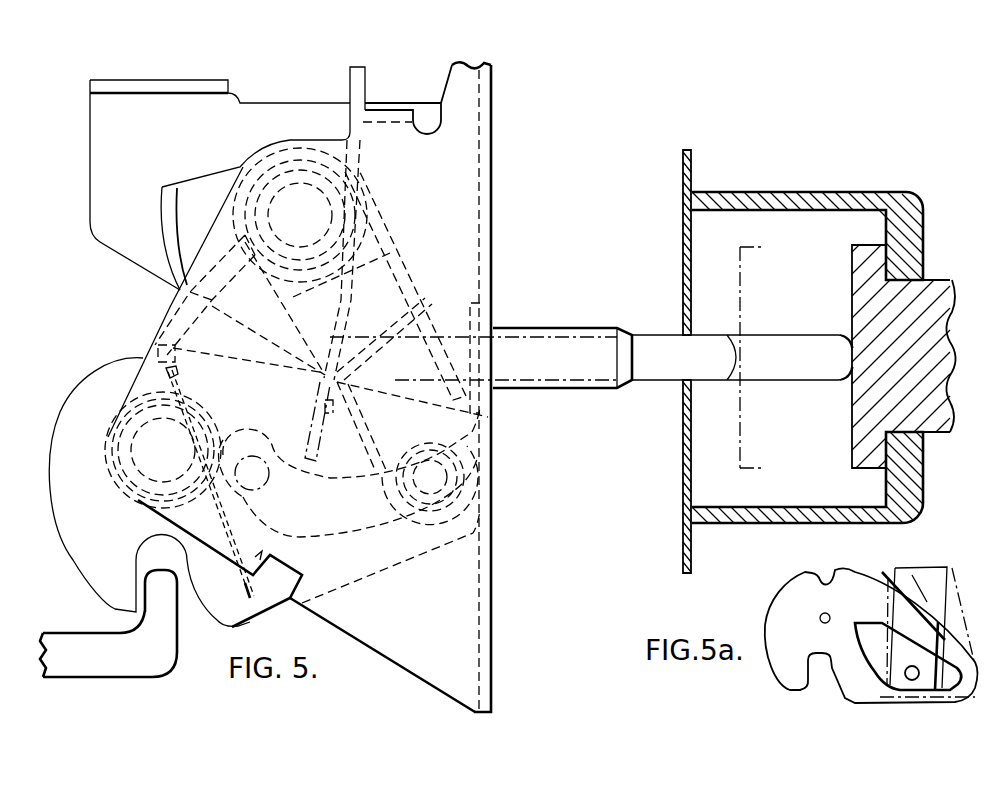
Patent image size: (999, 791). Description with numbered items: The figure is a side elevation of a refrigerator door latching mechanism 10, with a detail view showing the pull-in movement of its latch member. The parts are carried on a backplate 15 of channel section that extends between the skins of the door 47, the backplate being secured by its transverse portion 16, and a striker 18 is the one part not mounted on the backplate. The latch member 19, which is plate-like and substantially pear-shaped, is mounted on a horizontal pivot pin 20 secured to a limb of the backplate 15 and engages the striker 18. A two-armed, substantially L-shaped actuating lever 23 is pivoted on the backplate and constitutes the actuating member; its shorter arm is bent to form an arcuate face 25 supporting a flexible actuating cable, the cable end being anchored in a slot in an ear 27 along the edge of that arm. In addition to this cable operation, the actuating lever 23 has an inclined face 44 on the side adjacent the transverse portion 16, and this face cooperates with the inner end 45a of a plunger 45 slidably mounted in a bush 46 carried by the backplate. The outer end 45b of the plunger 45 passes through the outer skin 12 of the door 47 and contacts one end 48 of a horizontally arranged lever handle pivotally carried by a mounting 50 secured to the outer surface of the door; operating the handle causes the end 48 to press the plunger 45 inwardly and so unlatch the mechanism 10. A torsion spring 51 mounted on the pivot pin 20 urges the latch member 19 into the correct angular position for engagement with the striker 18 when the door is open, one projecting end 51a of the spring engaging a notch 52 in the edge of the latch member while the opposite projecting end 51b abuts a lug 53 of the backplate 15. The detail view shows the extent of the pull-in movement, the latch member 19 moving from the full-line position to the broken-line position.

In FIG. 5, the latching mechanism 10 is at (376, 652).
In FIG. 5, the outer skin 12 is at (682, 172).
In FIG. 5, the backplate 15 is at (492, 155).
In FIG. 5, the transverse portion 16 is at (487, 211).
In FIG. 5, the striker 18 is at (106, 648).
In FIG. 5, the latch member 19 is at (237, 616).
In FIG. 5a, the latch member 19 is at (783, 656).
In FIG. 5, the pivot pin 20 is at (147, 452).
In FIG. 5, the actuating lever 23 is at (392, 268).
In FIG. 5a, the actuating lever 23 is at (898, 592).
In FIG. 5, the arcuate face 25 is at (166, 246).
In FIG. 5, the ear 27 is at (176, 317).
In FIG. 5, the inclined face 44 is at (418, 302).
In FIG. 5, the plunger 45 is at (655, 334).
In FIG. 5, the inner end of plunger 45a is at (421, 342).
In FIG. 5, the outer end of plunger 45b is at (851, 345).
In FIG. 5, the bush 46 is at (545, 327).
In FIG. 5, the door 47 is at (683, 542).
In FIG. 5, the end of lever handle 48 is at (858, 318).
In FIG. 5, the mounting 50 is at (822, 192).
In FIG. 5, the torsion spring 51 is at (142, 410).
In FIG. 5, the projecting end of spring 51a is at (176, 386).
In FIG. 5, the projecting end of spring 51b is at (246, 590).
In FIG. 5, the notch 52 is at (158, 350).
In FIG. 5, the lug 53 is at (256, 557).